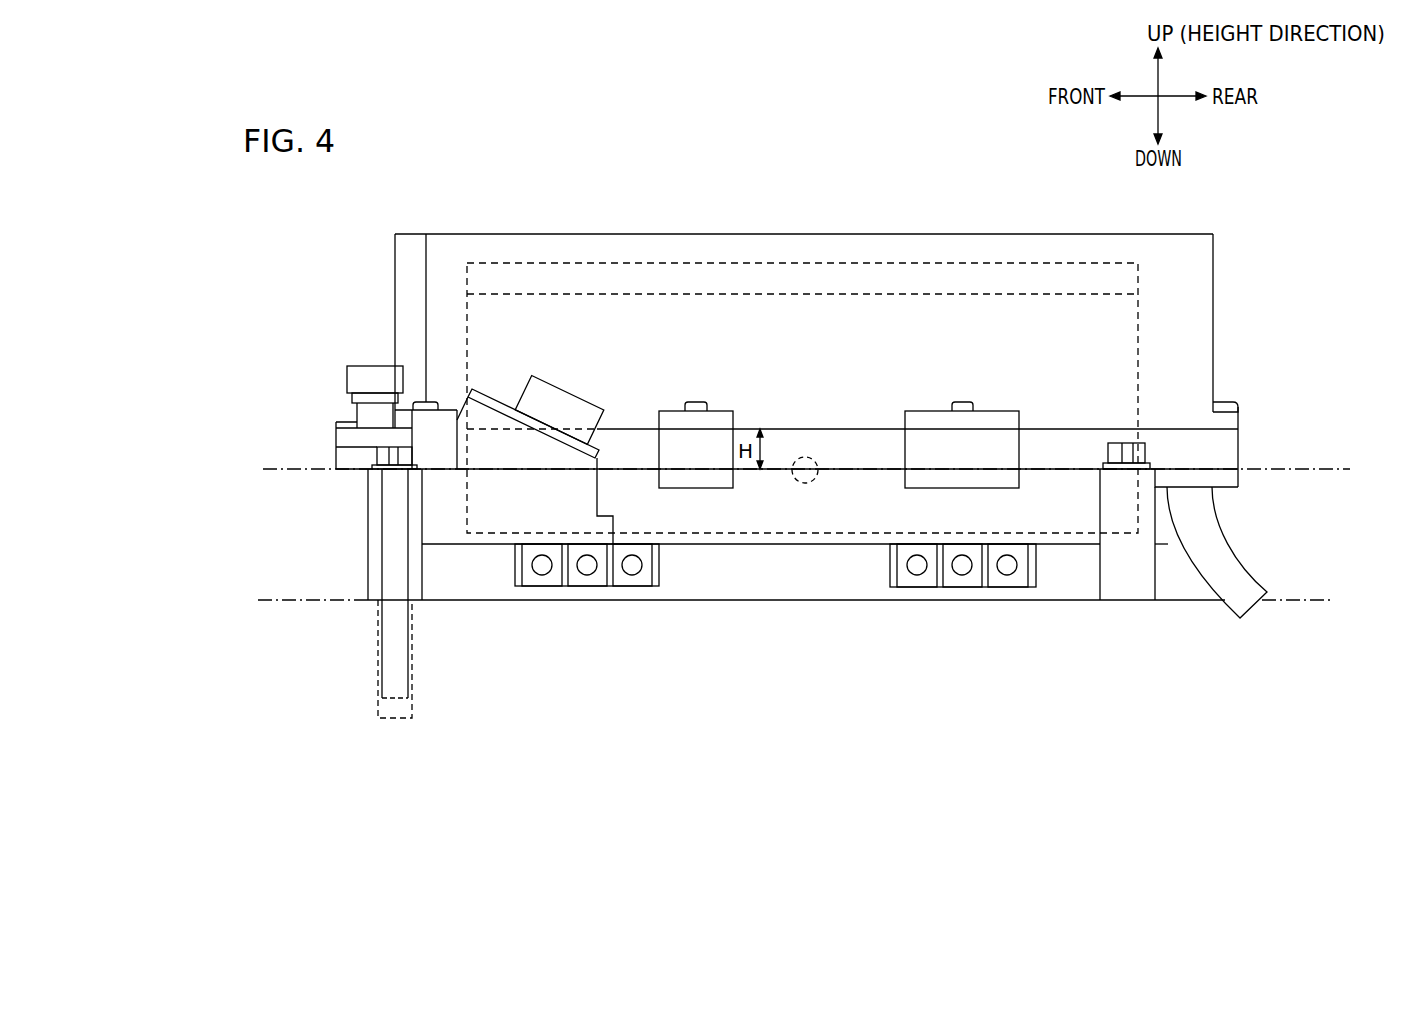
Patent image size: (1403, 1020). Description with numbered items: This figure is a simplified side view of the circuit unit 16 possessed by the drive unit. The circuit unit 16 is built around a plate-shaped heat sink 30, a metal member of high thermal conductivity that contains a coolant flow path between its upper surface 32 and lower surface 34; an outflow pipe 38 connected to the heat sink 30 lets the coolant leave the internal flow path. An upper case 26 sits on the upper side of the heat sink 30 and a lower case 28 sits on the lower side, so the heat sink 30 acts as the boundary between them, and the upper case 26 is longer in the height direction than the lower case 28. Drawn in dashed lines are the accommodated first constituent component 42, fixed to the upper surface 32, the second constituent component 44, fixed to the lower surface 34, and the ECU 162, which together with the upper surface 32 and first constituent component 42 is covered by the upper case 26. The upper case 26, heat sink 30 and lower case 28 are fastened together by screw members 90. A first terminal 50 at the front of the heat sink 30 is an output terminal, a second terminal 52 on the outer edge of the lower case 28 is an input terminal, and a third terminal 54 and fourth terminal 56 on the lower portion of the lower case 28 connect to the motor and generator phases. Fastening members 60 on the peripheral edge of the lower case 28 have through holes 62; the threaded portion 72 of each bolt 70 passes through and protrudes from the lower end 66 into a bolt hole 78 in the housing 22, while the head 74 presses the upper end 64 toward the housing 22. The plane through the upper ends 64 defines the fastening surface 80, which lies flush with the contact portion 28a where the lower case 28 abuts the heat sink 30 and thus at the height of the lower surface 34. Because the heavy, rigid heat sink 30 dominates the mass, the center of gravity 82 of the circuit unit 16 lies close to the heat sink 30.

The circuit unit 16 is at (605, 179).
The housing 22 is at (1324, 598).
The upper case 26 is at (971, 234).
The lower case 28 is at (1188, 600).
The contact portion 28a is at (622, 468).
The heat sink 30 is at (1240, 437).
The upper surface 32 is at (1224, 426).
The lower surface 34 is at (1225, 488).
The outflow pipe 38 is at (1238, 568).
The first constituent component 42 is at (735, 294).
The second constituent component 44 is at (750, 535).
The first terminal 50 is at (375, 366).
The second terminal 52 is at (553, 378).
The third terminal 54 is at (632, 587).
The fourth terminal 56 is at (917, 587).
The fastening member 60 is at (372, 510).
The through hole 62 is at (375, 558).
The upper end 64 is at (420, 468).
The lower end 66 is at (410, 600).
The bolt 70 is at (1145, 453).
The threaded portion 72 is at (388, 484).
The head 74 is at (377, 455).
The bolt hole 78 is at (412, 707).
The fastening surface 80 is at (1326, 478).
The center of gravity 82 is at (813, 481).
The screw member 90 is at (700, 402).
The ECU 162 is at (892, 263).